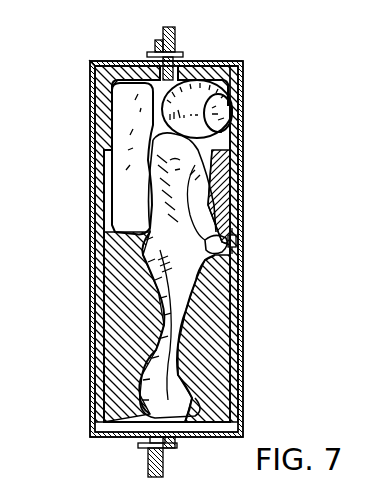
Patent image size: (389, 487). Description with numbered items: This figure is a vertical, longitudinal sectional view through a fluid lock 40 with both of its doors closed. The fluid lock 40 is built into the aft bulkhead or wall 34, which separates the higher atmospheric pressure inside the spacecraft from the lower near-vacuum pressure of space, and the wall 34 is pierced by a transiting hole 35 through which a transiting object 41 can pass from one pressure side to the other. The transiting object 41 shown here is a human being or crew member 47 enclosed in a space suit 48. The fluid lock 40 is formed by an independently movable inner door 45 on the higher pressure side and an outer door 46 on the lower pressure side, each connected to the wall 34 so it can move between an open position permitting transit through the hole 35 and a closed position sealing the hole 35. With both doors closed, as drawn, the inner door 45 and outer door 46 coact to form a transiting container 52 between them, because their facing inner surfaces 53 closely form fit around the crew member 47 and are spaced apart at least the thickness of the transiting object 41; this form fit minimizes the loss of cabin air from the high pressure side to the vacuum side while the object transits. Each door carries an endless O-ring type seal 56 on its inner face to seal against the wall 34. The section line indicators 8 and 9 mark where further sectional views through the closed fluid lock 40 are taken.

The fluid lock 40 is at (216, 48).
The O-ring type seal 56 is at (186, 56).
The transiting hole 35 is at (182, 438).
The aft bulkhead or wall 34 is at (163, 466).
The inner door 45 is at (90, 341).
The outer door 46 is at (243, 275).
The inner surfaces 53 is at (138, 380).
The transiting container 52 is at (243, 312).
The transiting object 41 is at (230, 118).
The human being or crew member 47 is at (243, 113).
The space suit 48 is at (243, 113).
The section line 8- 8 is at (90, 155).
The section line 9- 9 is at (65, 165).